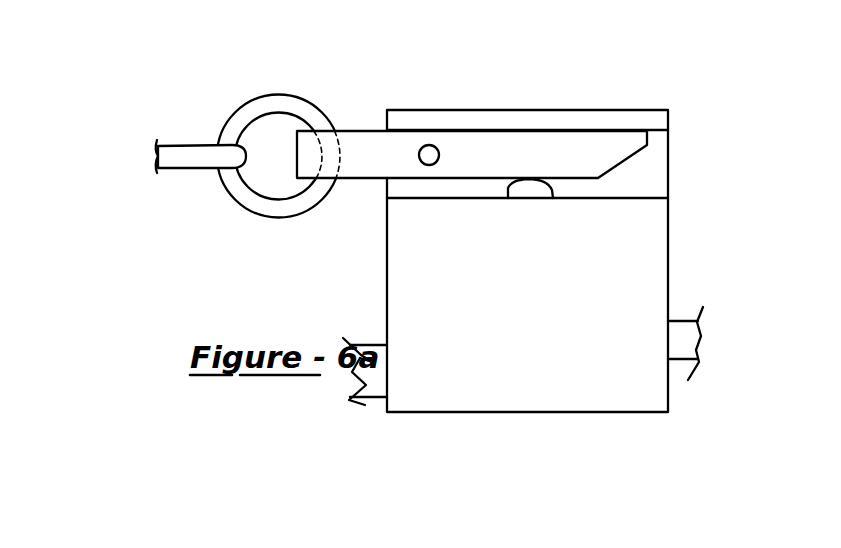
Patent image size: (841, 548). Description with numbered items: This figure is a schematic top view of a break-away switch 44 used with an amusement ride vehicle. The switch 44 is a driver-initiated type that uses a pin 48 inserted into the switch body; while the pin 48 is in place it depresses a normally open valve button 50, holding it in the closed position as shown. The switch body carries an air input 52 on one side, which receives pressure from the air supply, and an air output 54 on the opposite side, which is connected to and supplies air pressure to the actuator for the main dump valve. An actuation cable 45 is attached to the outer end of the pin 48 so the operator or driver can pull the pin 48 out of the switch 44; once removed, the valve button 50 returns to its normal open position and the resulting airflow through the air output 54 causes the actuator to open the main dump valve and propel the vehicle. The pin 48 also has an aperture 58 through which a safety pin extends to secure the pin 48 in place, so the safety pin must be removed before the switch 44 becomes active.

The switch 44 is at (569, 90).
The actuation cable 45 is at (200, 150).
The pin 48 is at (368, 179).
The valve button 50 is at (530, 188).
The air input 52 is at (353, 377).
The air output 54 is at (684, 338).
The aperture 58 is at (429, 155).